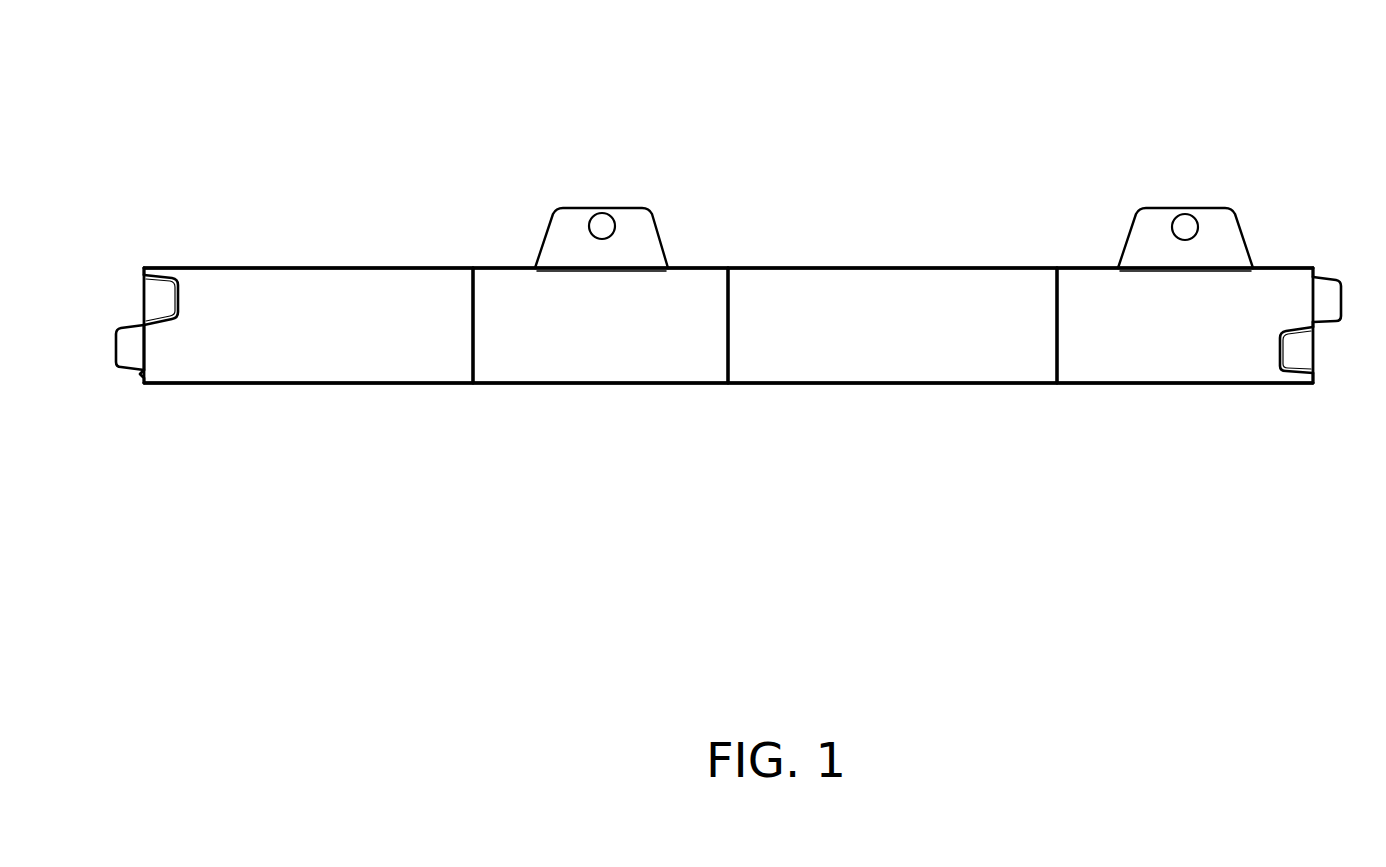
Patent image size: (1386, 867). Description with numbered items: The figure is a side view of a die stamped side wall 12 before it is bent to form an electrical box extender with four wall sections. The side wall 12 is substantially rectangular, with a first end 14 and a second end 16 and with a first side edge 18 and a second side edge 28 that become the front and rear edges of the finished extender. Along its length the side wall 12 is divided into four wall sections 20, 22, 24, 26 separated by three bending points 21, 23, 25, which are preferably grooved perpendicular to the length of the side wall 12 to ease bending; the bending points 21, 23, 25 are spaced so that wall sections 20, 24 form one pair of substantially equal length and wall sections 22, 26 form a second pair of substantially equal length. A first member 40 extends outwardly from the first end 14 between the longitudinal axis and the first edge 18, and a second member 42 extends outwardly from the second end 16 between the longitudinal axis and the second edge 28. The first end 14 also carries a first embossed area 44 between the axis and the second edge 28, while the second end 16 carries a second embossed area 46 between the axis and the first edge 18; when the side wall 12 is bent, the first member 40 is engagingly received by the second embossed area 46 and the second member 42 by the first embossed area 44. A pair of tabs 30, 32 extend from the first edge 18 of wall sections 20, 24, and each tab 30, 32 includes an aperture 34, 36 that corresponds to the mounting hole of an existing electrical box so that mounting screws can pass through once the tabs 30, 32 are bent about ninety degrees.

The side wall 12 is at (820, 200).
The first end 14 is at (1297, 267).
The second end 16 is at (157, 266).
The first side edge 18 is at (262, 266).
The wall section 20 is at (1185, 368).
The bending point 21 is at (1058, 384).
The wall section 22 is at (1015, 290).
The bending point 23 is at (728, 390).
The wall section 24 is at (590, 331).
The bending point 25 is at (472, 384).
The wall section 26 is at (380, 315).
The second side edge 28 is at (237, 384).
The tab 30 is at (1133, 212).
The tab 32 is at (637, 236).
The aperture 34 is at (1185, 227).
The aperture 36 is at (603, 226).
The first member 40 is at (1335, 294).
The second member 42 is at (123, 371).
The first embossed area 44 is at (1310, 352).
The second embossed area 46 is at (160, 303).